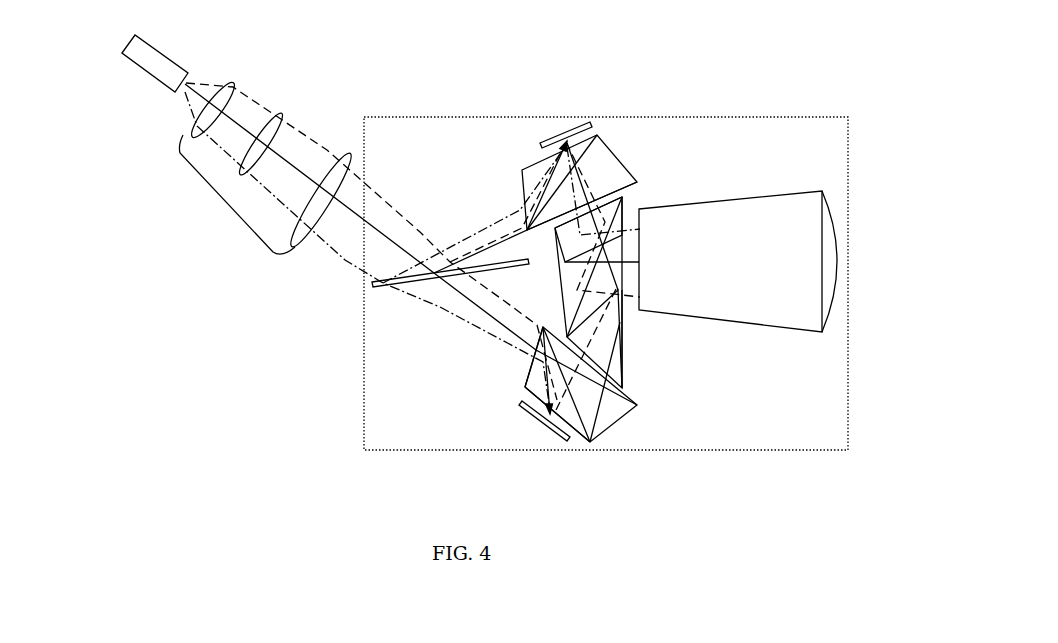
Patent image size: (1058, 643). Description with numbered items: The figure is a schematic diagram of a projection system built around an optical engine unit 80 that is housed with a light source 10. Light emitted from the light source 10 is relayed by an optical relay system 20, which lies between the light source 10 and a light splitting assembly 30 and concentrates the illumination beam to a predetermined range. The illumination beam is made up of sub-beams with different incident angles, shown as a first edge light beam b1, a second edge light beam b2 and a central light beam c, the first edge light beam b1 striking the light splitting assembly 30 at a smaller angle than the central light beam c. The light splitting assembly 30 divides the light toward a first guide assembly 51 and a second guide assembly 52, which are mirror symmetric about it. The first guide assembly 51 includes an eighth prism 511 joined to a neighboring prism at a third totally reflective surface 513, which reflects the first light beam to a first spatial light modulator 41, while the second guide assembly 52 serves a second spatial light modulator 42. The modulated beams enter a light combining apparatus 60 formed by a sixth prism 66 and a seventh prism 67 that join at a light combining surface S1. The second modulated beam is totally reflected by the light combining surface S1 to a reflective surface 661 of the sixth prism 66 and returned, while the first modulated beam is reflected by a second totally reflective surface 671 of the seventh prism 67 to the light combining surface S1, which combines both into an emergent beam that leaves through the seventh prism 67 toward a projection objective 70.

The light source 10 is at (140, 69).
The optical relay system 20 is at (228, 205).
The light splitting assembly 30 is at (372, 288).
The first spatial light modulator 41 is at (523, 402).
The second spatial light modulator 42 is at (567, 122).
The first guide assembly 51 is at (525, 387).
The eighth prism 511 is at (537, 380).
The third totally reflective surface 513 is at (590, 441).
The second guide assembly 52 is at (530, 167).
The light combining surface S1 is at (637, 183).
The light combining apparatus 60 is at (622, 300).
The sixth prism 66 is at (600, 207).
The reflective surface 661 is at (558, 243).
The seventh prism 67 is at (615, 357).
The second totally reflective surface 671 is at (622, 365).
The projection objective 70 is at (797, 191).
The optical engine unit 80 is at (703, 110).
The first edge light beam b1 is at (212, 85).
The second edge light beam b2 is at (190, 113).
The central light beam c is at (182, 92).